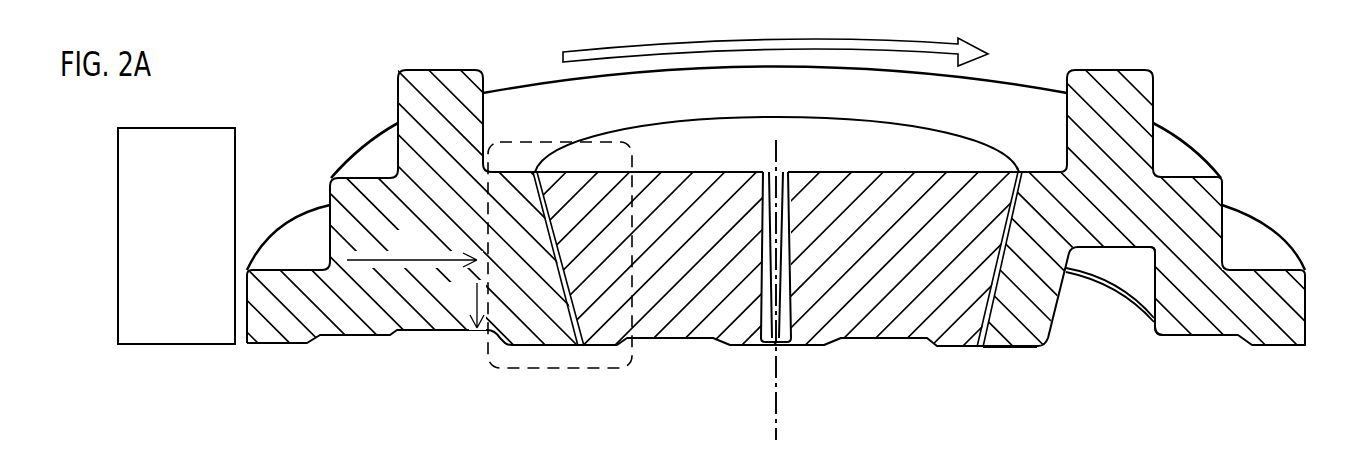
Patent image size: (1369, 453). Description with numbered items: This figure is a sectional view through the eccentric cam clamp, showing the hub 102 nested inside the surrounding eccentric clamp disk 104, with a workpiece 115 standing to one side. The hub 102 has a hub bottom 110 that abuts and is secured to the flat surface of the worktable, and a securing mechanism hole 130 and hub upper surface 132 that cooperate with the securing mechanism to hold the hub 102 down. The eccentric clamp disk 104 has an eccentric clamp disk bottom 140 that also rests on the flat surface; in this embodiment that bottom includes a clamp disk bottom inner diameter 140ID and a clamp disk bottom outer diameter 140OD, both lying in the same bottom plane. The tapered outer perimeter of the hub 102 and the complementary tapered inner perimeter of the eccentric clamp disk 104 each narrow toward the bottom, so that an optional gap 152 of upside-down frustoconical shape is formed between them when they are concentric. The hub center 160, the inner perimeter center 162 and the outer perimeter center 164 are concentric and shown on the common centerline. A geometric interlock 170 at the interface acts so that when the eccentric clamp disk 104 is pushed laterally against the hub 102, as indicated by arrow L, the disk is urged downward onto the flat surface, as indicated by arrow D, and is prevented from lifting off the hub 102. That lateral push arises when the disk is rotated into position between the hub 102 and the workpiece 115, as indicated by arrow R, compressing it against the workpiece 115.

The hub 102 is at (880, 318).
The eccentric clamp disk 104 is at (1197, 318).
The hub bottom 110 is at (808, 346).
The workpiece 115 is at (200, 242).
The securing mechanism hole 130 is at (765, 363).
The hub upper surface 132 is at (725, 160).
The eccentric clamp disk bottom 140 is at (1001, 348).
The clamp disk bottom inner diameter 140ID is at (1001, 348).
The clamp disk bottom outer diameter 140OD is at (1274, 348).
The gap 152 is at (566, 250).
The hub center 160 is at (775, 408).
The inner perimeter center 162 is at (691, 291).
The outer perimeter center 164 is at (691, 291).
The geometric interlock 170 is at (549, 372).
The arrow L is at (414, 249).
The arrow D is at (466, 305).
The arrow R is at (737, 34).